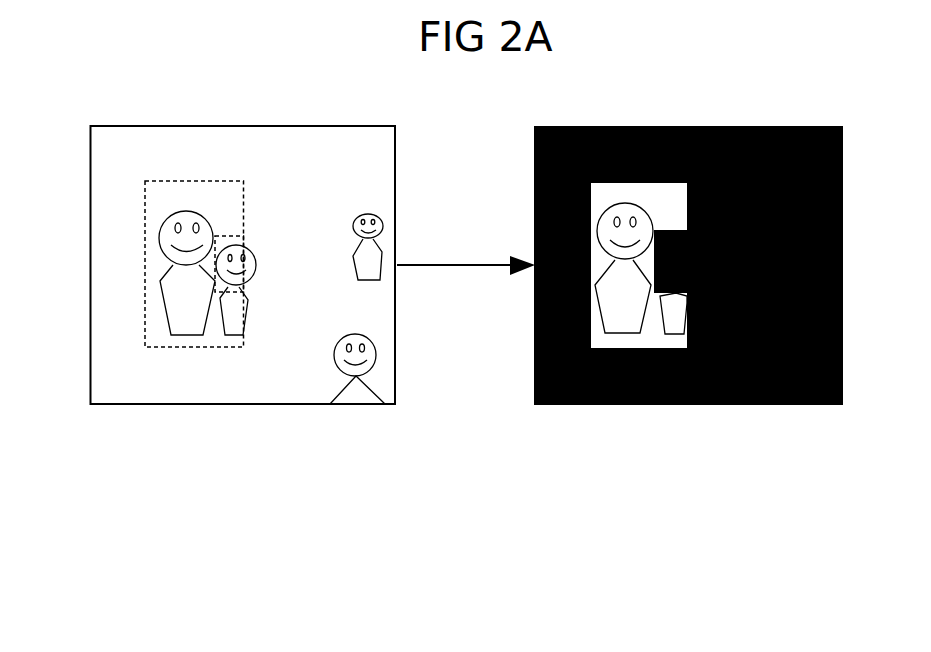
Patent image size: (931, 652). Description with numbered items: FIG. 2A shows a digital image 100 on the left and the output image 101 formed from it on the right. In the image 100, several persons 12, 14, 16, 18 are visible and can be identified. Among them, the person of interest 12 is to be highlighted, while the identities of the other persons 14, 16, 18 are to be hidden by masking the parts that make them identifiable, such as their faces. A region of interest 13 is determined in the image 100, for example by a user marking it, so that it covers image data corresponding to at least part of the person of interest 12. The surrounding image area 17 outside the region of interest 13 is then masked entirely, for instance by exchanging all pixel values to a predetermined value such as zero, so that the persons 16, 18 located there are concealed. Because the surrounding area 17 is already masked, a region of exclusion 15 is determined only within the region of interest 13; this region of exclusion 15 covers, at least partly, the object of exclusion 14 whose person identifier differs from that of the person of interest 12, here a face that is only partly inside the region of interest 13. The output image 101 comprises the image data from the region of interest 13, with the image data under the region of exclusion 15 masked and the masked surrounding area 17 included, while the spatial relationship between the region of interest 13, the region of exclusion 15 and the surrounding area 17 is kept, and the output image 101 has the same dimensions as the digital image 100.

The image 100 is at (323, 118).
The output image 101 is at (755, 110).
The person of interest 12 is at (172, 283).
The region of interest 13 is at (168, 173).
The object of exclusion 14 is at (228, 305).
The region of exclusion 15 is at (210, 228).
The person 16 is at (358, 248).
The surrounding image area 17 is at (215, 372).
The person 18 is at (347, 385).